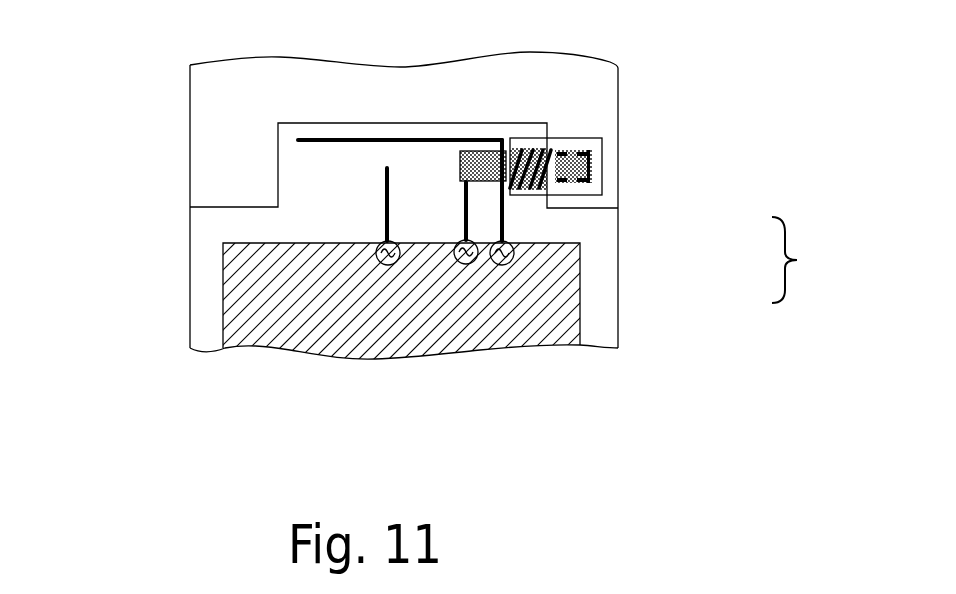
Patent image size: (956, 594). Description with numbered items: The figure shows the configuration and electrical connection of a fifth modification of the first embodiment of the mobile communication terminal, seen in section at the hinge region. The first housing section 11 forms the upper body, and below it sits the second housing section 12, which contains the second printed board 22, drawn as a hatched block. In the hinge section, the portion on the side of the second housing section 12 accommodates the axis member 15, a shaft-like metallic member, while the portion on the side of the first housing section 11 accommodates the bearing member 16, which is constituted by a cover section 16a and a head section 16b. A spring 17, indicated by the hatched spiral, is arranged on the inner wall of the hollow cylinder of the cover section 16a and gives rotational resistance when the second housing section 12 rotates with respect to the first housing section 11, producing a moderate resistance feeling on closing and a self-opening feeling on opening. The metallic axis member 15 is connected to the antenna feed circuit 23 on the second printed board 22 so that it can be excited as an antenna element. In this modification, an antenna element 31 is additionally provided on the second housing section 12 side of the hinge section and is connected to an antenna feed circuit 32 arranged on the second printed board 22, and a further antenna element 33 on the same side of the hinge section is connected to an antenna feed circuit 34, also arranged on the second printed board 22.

The first housing section 11 is at (190, 125).
The second housing section 12 is at (190, 250).
The second printed board 22 is at (223, 302).
The antenna element 31 is at (347, 138).
The antenna element 33 is at (385, 207).
The antenna feed circuit 34 is at (392, 265).
The antenna feed circuit 23 is at (470, 264).
The antenna feed circuit 32 is at (506, 264).
The axis member 15 is at (590, 167).
The bearing member 16 is at (805, 260).
The cover section 16a is at (522, 193).
The head section 16b is at (567, 197).
The spring 17 is at (525, 148).